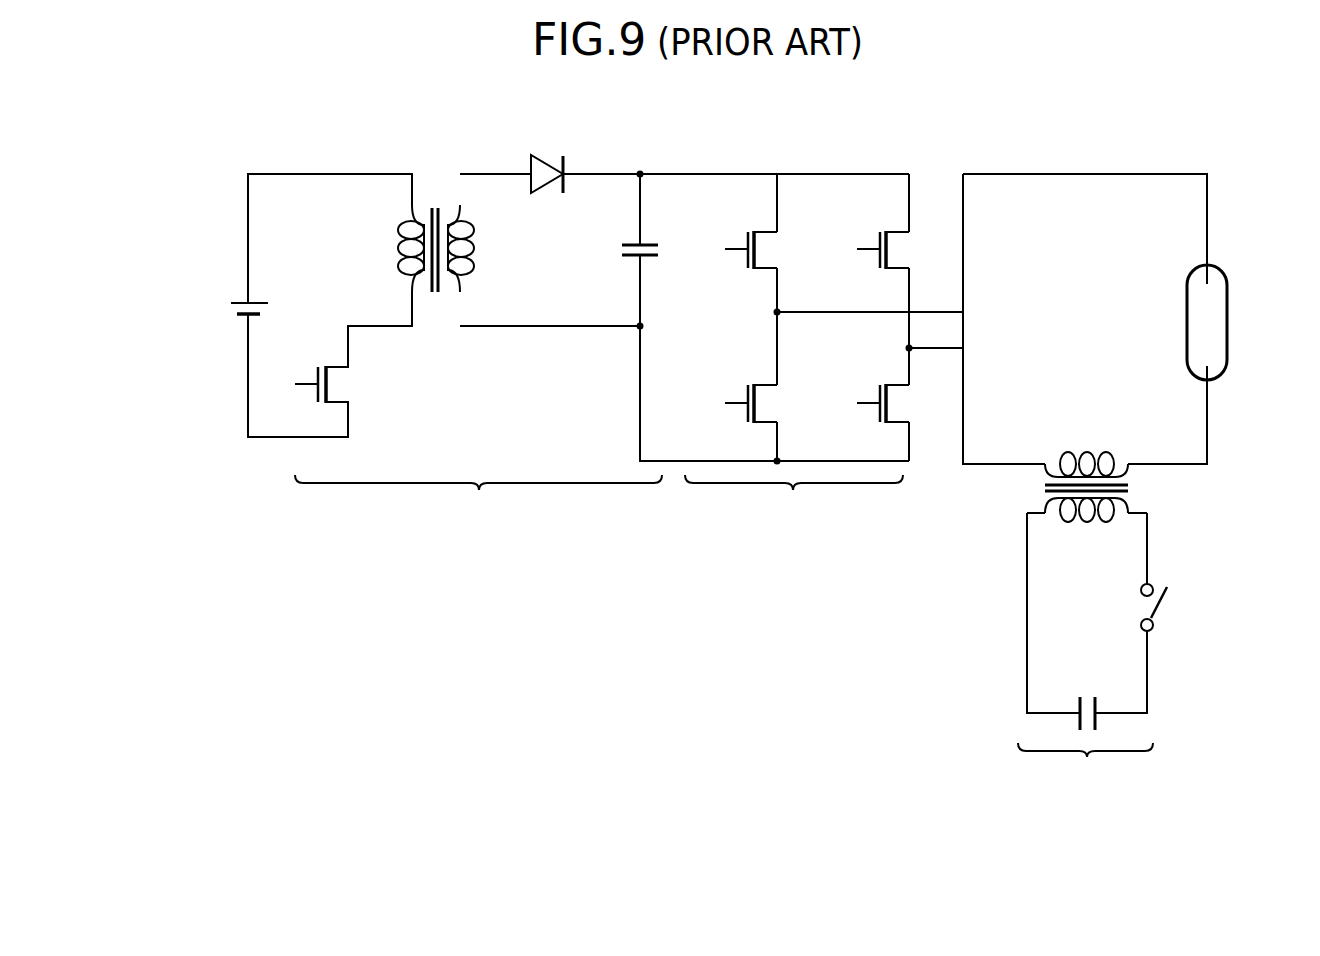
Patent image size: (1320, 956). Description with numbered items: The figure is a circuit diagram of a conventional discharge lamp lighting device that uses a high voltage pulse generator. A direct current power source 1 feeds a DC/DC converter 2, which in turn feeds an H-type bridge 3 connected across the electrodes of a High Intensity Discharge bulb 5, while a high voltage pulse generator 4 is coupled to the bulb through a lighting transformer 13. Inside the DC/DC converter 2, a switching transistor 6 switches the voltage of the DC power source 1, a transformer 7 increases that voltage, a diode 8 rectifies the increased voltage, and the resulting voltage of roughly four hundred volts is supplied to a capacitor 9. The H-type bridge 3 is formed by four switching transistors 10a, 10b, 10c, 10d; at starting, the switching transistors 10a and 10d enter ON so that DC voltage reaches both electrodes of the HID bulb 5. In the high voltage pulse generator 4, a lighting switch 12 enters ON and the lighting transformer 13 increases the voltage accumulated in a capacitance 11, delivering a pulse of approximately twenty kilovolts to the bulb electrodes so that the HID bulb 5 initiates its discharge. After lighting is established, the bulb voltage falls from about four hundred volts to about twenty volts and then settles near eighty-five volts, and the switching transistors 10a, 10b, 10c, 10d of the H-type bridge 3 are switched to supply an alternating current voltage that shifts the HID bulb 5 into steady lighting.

The direct current power source 1 is at (229, 310).
The DC/DC converter 2 is at (488, 525).
The H-type bridge 3 is at (802, 525).
The high voltage pulse generator 4 is at (1096, 790).
The High Intensity Discharge bulb 5 is at (1230, 319).
The switching transistor 6 is at (350, 388).
The transformer 7 is at (435, 201).
The diode 8 is at (546, 158).
The capacitor 9 is at (614, 251).
The switching transistor 10a is at (743, 235).
The switching transistor 10b is at (743, 393).
The switching transistor 10c is at (875, 235).
The switching transistor 10d is at (873, 395).
The capacitance 11 is at (1087, 692).
The lighting switch 12 is at (1165, 613).
The lighting transformer 13 is at (1135, 491).